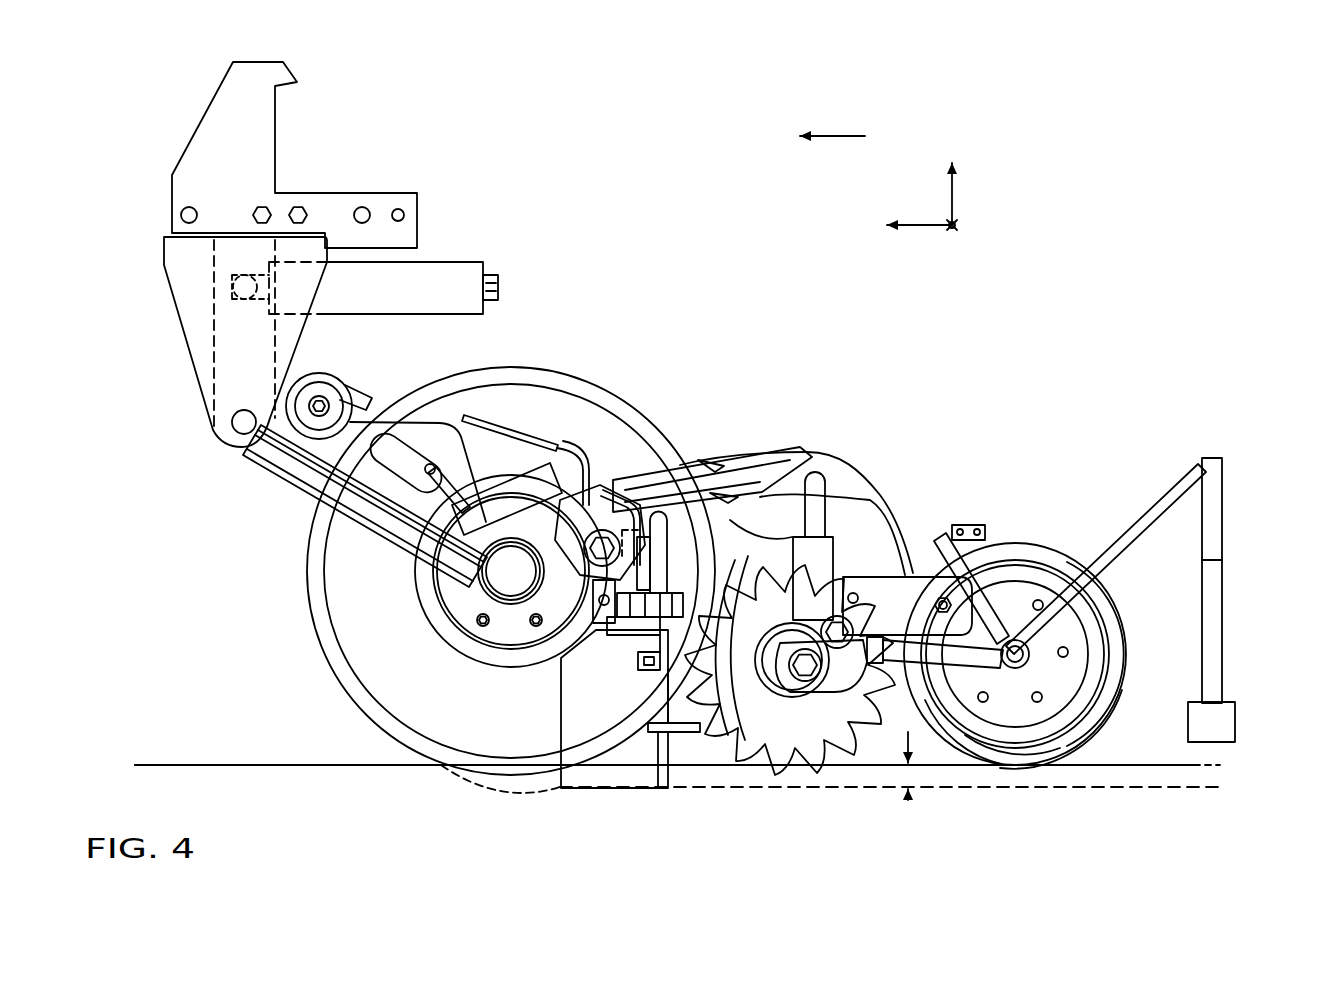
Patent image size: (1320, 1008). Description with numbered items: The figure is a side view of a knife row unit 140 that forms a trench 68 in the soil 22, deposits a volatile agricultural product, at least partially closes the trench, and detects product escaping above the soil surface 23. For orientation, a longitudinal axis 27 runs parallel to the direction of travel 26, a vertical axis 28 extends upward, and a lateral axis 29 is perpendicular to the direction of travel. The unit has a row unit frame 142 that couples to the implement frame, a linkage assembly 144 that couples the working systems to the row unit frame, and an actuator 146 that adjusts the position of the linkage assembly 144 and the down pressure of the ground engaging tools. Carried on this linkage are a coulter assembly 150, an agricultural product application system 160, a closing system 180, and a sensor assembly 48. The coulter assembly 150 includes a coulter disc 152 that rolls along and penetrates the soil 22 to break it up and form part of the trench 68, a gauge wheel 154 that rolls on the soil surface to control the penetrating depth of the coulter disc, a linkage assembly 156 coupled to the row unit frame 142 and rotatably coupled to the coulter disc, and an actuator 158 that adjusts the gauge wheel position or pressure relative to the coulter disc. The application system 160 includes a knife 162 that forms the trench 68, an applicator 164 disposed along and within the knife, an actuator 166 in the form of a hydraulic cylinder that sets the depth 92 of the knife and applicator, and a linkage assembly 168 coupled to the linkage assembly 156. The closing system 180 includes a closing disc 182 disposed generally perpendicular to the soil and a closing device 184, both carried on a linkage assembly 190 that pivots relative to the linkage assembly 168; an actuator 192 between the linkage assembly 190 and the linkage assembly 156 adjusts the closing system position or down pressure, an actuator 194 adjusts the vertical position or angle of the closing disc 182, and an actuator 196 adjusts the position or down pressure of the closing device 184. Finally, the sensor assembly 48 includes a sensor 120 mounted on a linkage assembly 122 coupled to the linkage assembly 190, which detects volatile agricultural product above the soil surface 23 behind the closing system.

The soil 22 is at (308, 846).
The soil surface 23 is at (228, 766).
The direction of travel 26 is at (838, 136).
The longitudinal axis 27 is at (928, 228).
The vertical axis 28 is at (955, 195).
The lateral axis 29 is at (960, 225).
The sensor assembly 48 is at (1230, 682).
The trench 68 is at (1050, 790).
The depth 92 is at (908, 800).
The sensor 120 is at (1236, 722).
The linkage assembly 122 is at (1229, 573).
The knife row unit 140 is at (1037, 302).
The row unit frame 142 is at (368, 153).
The linkage assembly 144 is at (890, 382).
The actuator 146 is at (455, 258).
The coulter assembly 150 is at (460, 797).
The coulter disc 152 is at (306, 622).
The gauge wheel 154 is at (757, 495).
The linkage assembly 156 is at (280, 482).
The actuator 158 is at (335, 378).
The agricultural product application system 160 is at (585, 797).
The knife 162 is at (600, 707).
The applicator 164 is at (675, 745).
The actuator 166 is at (679, 470).
The linkage assembly 168 is at (620, 440).
The closing system 180 is at (972, 797).
The closing disc 182 is at (825, 767).
The closing device 184 is at (1100, 725).
The linkage assembly 190 is at (900, 468).
The actuator 192 is at (548, 452).
The actuator 194 is at (898, 512).
The actuator 196 is at (1003, 556).